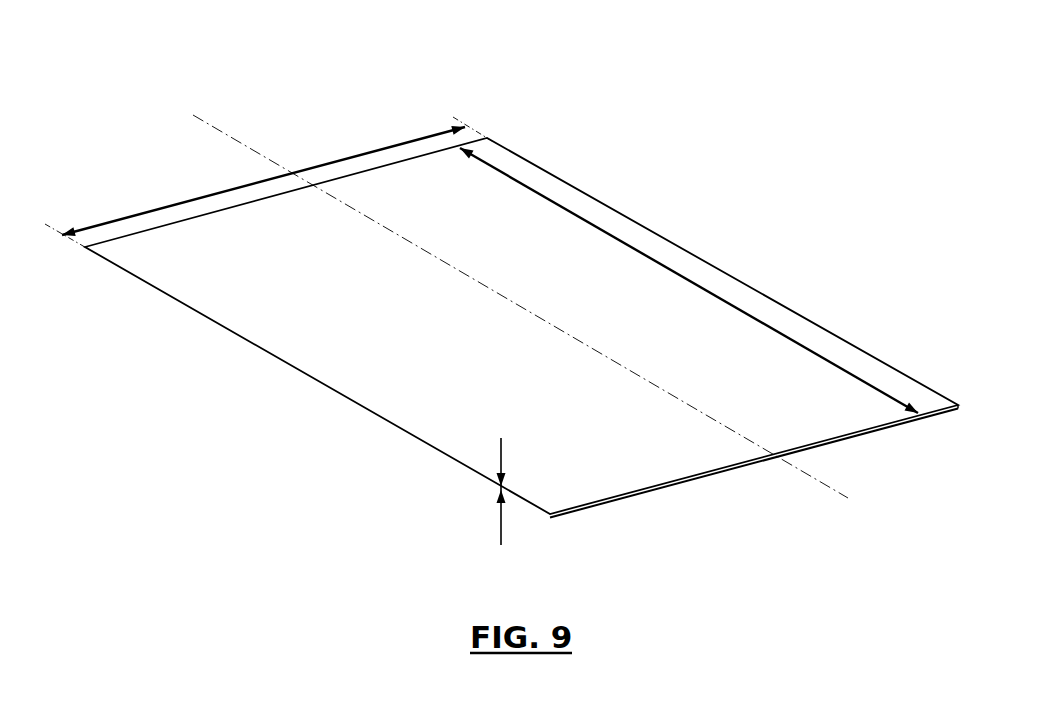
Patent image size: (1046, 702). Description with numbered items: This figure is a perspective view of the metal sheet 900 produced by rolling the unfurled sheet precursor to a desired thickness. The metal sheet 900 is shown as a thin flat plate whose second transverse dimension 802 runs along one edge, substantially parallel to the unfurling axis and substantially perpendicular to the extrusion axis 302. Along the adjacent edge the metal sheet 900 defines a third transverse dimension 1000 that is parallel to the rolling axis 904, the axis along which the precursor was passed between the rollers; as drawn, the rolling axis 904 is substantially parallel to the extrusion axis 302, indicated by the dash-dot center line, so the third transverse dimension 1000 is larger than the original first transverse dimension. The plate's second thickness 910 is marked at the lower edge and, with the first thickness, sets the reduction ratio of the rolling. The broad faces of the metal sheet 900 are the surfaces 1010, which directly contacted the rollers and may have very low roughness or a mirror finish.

The metal sheet 900 is at (501, 303).
The second transverse dimension 802 is at (369, 150).
The third transverse dimension 1000 is at (570, 211).
The surfaces 1010 is at (396, 431).
The second thickness 910 is at (498, 504).
The extrusion axis 302 is at (561, 345).
The rolling axis 904 is at (785, 466).